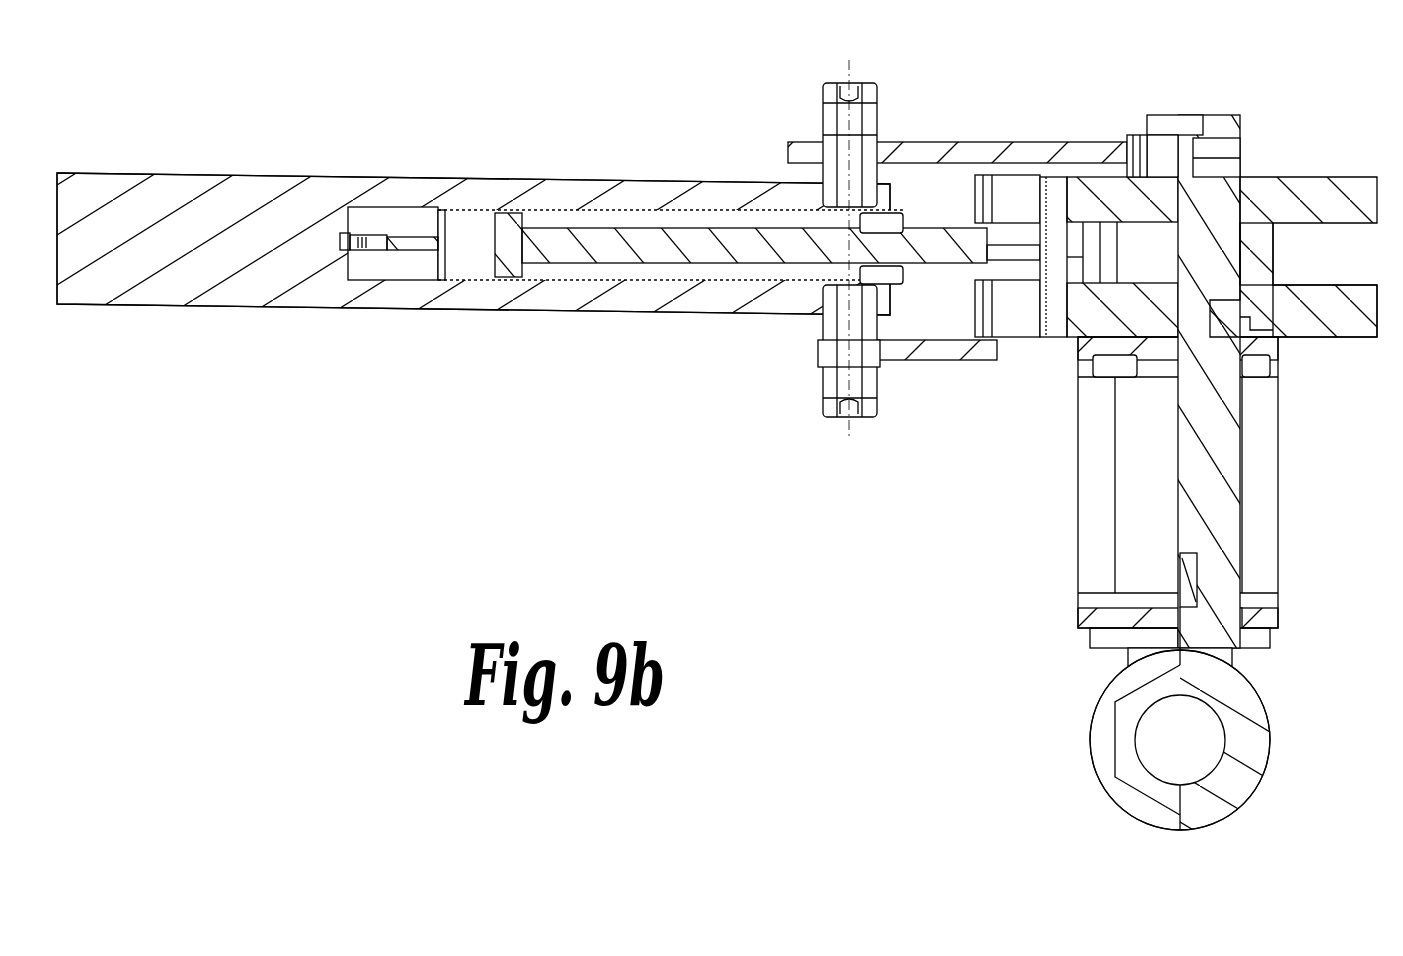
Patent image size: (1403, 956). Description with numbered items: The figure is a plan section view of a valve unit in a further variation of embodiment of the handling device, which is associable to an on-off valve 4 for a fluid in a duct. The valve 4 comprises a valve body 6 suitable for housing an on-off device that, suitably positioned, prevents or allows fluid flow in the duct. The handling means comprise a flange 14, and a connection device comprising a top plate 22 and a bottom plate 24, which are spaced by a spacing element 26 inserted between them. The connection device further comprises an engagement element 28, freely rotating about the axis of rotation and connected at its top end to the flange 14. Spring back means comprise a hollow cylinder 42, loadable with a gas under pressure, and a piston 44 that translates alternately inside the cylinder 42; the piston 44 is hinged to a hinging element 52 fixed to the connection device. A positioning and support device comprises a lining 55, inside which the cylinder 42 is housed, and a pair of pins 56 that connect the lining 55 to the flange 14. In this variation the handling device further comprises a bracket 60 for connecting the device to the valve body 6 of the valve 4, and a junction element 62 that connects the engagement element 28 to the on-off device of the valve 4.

The on-off valve 4 is at (1075, 715).
The valve body 6 is at (1130, 750).
The flange 14 is at (990, 125).
The top plate 22 is at (1318, 195).
The bottom plate 24 is at (1333, 318).
The spacing element 26 is at (1260, 240).
The engagement element 28 is at (1195, 248).
The hollow cylinder 42 is at (455, 278).
The piston 44 is at (655, 245).
The hinging element 52 is at (1046, 180).
The lining 55 is at (277, 165).
The pins 56 is at (888, 68).
The bracket 60 is at (1055, 487).
The junction element 62 is at (1215, 508).